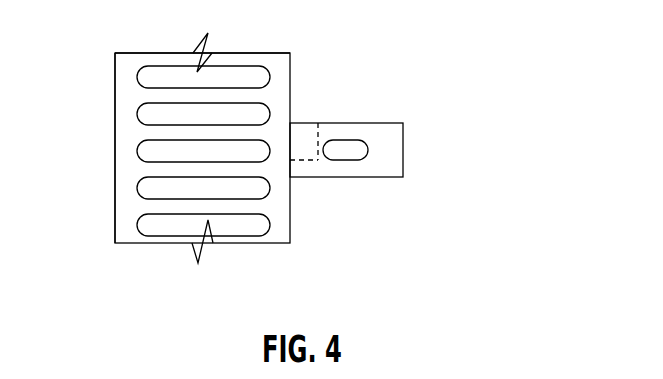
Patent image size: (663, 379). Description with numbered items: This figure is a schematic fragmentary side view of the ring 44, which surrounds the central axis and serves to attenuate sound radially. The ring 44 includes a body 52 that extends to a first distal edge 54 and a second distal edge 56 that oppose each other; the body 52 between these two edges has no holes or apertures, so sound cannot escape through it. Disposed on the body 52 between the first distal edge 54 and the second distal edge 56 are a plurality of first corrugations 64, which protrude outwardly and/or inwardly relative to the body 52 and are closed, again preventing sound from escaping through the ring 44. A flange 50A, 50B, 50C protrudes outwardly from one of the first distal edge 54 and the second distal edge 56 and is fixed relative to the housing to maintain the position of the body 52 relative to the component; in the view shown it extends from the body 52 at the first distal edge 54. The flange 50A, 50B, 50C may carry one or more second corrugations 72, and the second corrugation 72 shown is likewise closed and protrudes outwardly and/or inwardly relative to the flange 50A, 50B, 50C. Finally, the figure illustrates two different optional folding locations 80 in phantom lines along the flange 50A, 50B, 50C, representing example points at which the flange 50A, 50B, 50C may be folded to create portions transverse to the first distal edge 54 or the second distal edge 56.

The ring 44 is at (320, 152).
The body 52 is at (201, 152).
The first distal edge 54 is at (290, 70).
The second distal edge 56 is at (115, 190).
The first corrugations 64 is at (160, 74).
The second corrugation 72 is at (345, 140).
The folding locations 80 is at (292, 158).
The flange 50A is at (445, 157).
The flange 50B is at (445, 157).
The flange 50C is at (445, 157).